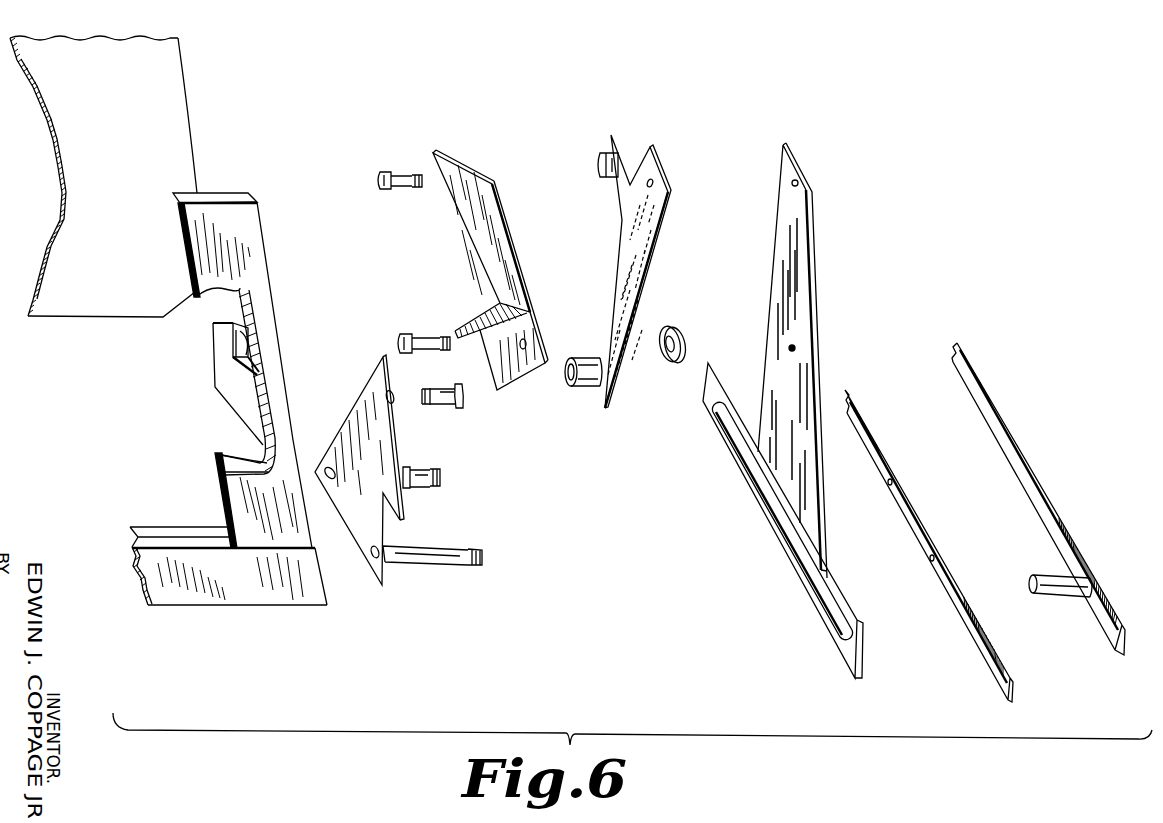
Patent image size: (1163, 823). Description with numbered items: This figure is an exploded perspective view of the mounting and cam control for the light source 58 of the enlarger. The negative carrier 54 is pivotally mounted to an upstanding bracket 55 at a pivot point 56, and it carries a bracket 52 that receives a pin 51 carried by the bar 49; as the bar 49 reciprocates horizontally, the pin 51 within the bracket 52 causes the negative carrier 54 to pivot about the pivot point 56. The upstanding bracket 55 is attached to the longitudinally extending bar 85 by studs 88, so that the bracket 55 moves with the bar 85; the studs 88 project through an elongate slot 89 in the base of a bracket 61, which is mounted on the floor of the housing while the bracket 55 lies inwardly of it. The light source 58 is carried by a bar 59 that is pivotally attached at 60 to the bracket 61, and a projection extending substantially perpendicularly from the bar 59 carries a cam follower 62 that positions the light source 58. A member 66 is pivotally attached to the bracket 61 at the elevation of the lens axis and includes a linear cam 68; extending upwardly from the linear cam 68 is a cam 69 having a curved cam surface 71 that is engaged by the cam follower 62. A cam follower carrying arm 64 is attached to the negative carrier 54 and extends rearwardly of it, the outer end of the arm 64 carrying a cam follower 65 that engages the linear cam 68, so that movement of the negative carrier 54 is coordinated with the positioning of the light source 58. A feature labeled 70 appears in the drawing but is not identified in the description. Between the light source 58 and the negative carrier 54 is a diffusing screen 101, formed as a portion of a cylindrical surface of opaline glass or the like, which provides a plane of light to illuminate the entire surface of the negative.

The diffusing screen 101 is at (193, 168).
The negative carrier 54 is at (260, 247).
The cam follower carrying arm 64 is at (231, 408).
The cam follower 65 is at (234, 325).
The bracket 52 is at (247, 604).
The upstanding bracket 55 is at (403, 446).
The studs 88 is at (417, 485).
The pivot point 56 is at (445, 405).
The cam 69 is at (475, 222).
The curved cam surface 71 is at (480, 176).
The member 66 is at (500, 236).
The linear cam 68 is at (472, 330).
The hole 70 is at (530, 338).
The bar 59 is at (612, 273).
The cam follower 62 is at (597, 163).
The light source 58 is at (570, 364).
The bracket 61 is at (805, 290).
The pivotal attachment 60 is at (801, 180).
The elongate slot 89 is at (837, 617).
The bar 85 is at (948, 598).
The bar 49 is at (1110, 557).
The pin 51 is at (1043, 568).